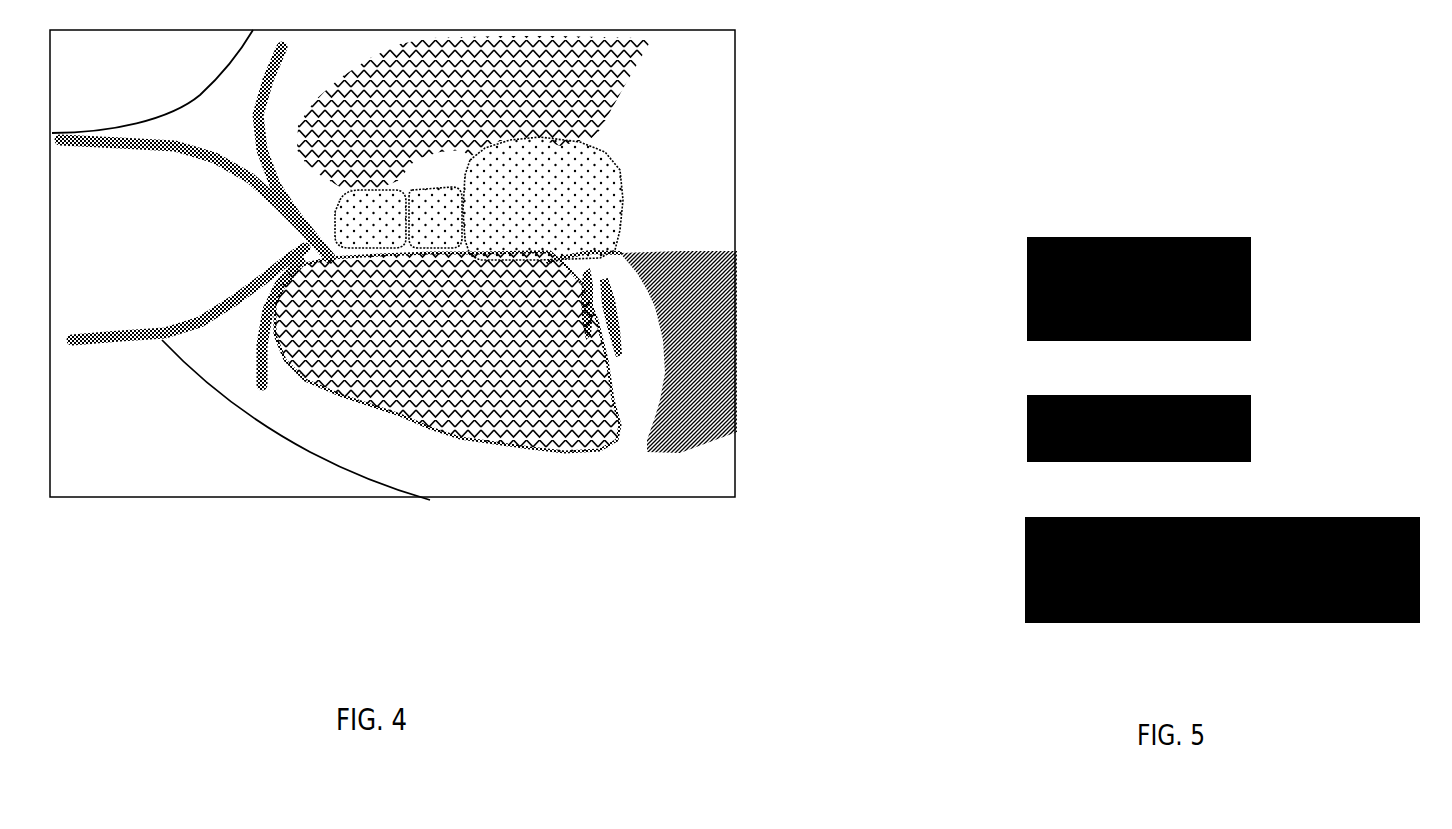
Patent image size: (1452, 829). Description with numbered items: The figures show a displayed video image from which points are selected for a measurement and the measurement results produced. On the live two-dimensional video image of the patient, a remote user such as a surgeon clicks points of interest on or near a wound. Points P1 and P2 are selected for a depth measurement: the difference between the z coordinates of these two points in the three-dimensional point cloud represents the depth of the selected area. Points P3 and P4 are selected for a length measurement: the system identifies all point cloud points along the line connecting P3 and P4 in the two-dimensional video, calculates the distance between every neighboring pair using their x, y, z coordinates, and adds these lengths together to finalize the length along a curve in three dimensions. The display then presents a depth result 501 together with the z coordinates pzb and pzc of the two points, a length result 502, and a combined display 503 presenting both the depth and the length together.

In FIG. 5, the depth result 501 is at (1025, 290).
In FIG. 5, the length result 502 is at (1025, 432).
In FIG. 5, the console output of combined depth and length measurement 503 is at (1025, 565).
In FIG. 4, the first point P1 is at (506, 117).
In FIG. 4, the second point P2 is at (488, 163).
In FIG. 4, the third point P3 is at (560, 258).
In FIG. 4, the fourth point P4 is at (636, 429).